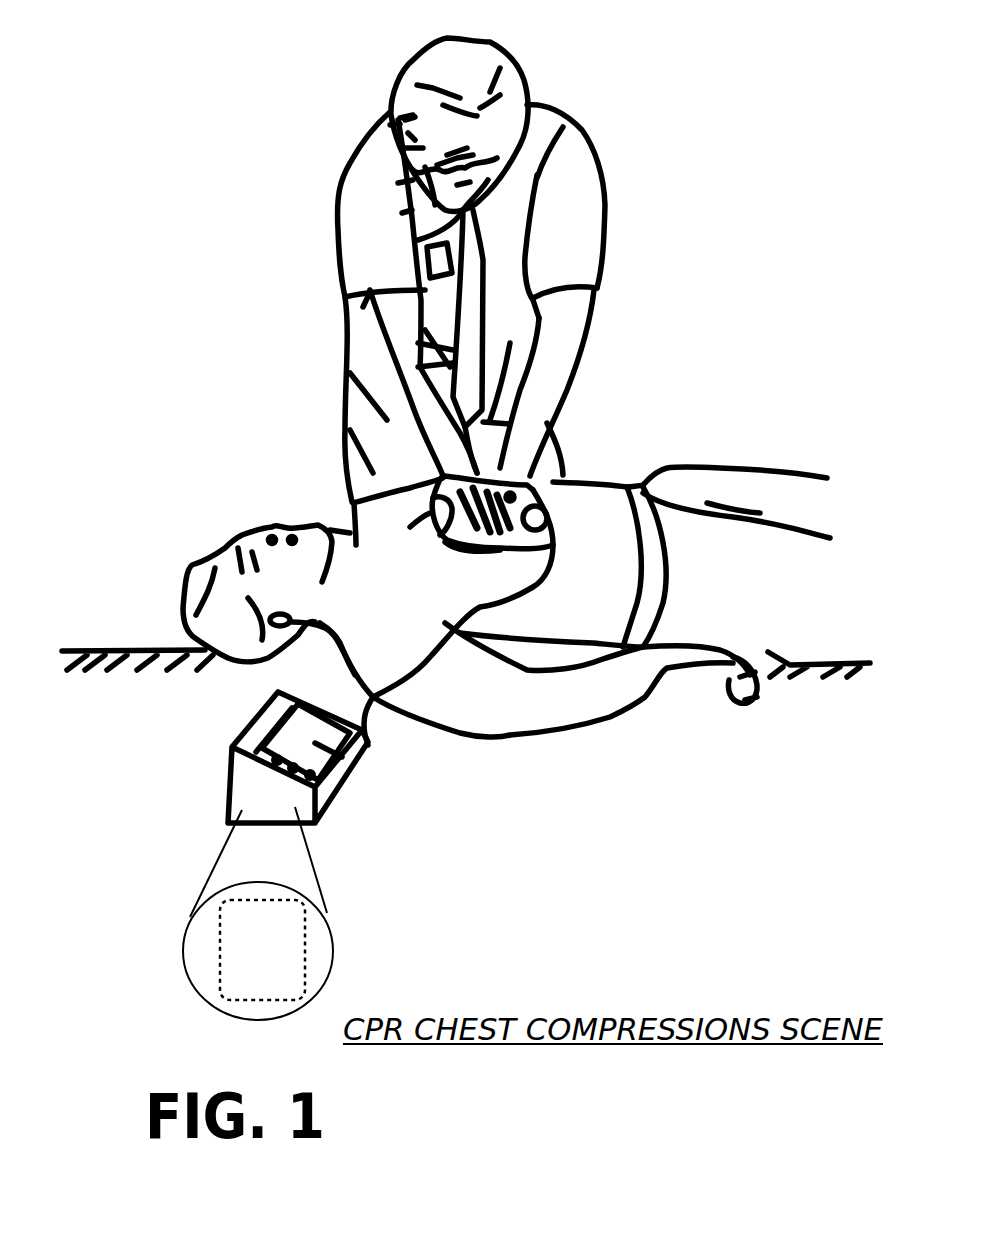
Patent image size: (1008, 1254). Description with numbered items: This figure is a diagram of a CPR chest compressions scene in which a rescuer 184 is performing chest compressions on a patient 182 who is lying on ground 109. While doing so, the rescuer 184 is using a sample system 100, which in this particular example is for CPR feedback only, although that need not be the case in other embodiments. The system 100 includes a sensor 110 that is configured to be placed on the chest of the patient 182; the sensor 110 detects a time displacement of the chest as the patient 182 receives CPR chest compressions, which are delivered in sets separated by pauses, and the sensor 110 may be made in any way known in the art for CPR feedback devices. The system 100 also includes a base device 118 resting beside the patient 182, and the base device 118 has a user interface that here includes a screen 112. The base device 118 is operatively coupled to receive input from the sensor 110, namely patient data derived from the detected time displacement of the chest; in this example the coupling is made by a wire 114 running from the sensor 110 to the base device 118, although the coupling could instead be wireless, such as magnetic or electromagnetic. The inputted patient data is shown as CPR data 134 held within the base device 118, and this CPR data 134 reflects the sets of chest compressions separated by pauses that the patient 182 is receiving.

The system 100 is at (207, 728).
The ground 109 is at (147, 635).
The sensor 110 is at (447, 517).
The screen 112 is at (348, 750).
The wire 114 is at (555, 573).
The base device 118 is at (300, 784).
The CPR data 134 is at (281, 936).
The patient 182 is at (230, 557).
The rescuer 184 is at (580, 158).